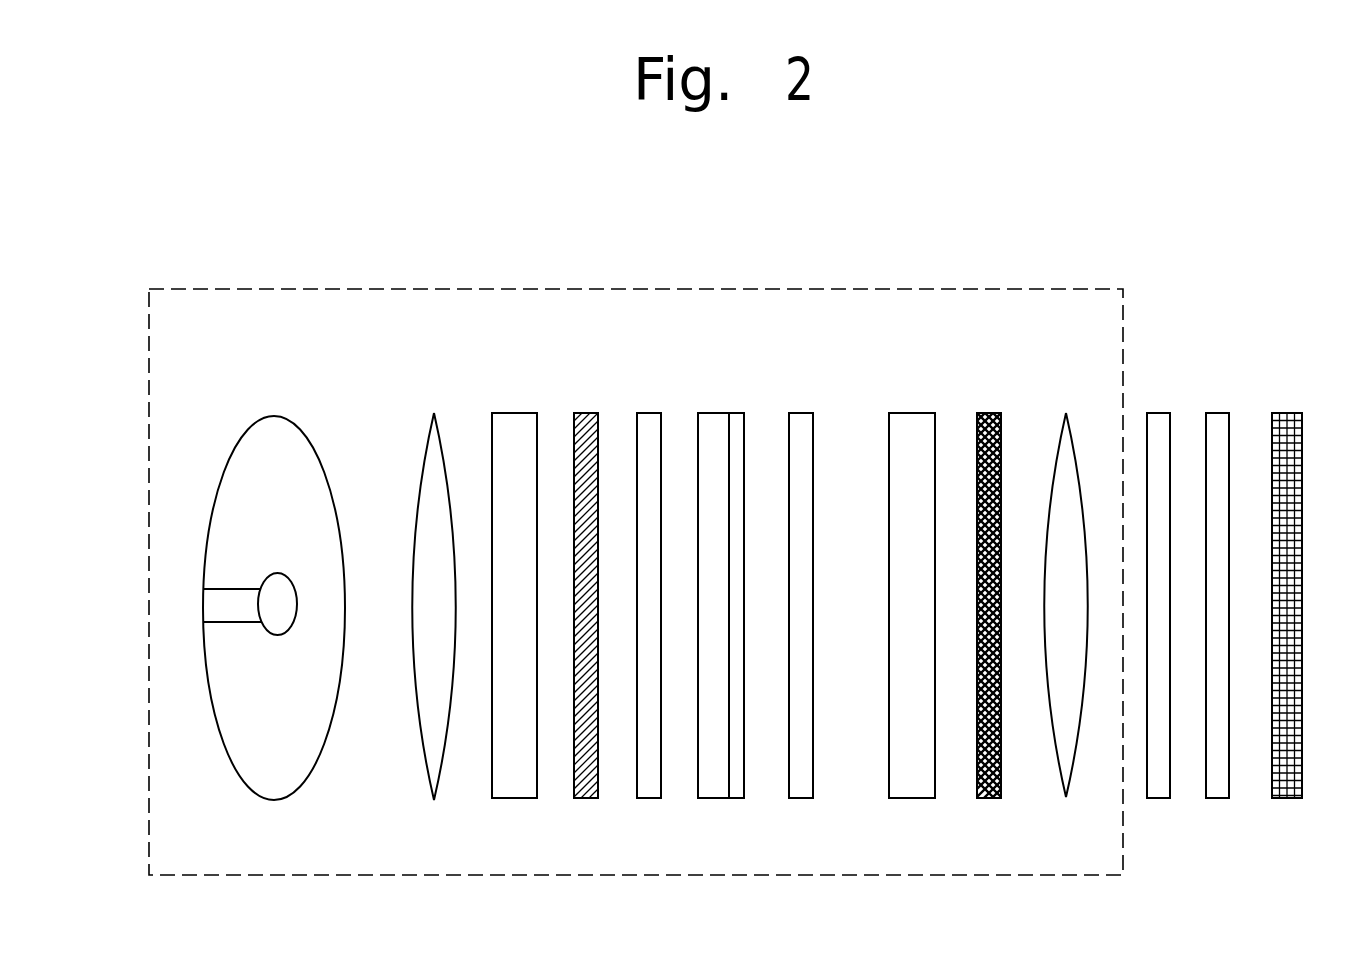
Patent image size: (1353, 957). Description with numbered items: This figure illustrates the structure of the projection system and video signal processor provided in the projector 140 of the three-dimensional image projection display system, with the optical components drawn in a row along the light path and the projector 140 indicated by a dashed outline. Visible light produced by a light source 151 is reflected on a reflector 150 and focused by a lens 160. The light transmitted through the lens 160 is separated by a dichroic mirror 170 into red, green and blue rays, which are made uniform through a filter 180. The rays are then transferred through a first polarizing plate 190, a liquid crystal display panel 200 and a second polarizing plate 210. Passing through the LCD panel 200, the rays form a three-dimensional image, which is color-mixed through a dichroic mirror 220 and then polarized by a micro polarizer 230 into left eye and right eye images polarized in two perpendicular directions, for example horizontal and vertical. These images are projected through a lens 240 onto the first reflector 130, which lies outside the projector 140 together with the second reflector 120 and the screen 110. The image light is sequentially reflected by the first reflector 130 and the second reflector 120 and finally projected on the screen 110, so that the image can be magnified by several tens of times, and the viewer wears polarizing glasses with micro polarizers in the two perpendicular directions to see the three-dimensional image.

The screen 110 is at (1287, 413).
The second reflector 120 is at (1218, 413).
The first reflector 130 is at (1159, 413).
The projector 140 is at (946, 289).
The reflector 150 is at (273, 416).
The light source 151 is at (278, 573).
The lens 160 is at (433, 413).
The dichroic mirror 170 is at (514, 413).
The filter 180 is at (584, 413).
The first polarizing plate 190 is at (650, 413).
The liquid crystal display (LCD) panel 200 is at (722, 413).
The second polarizing plate 210 is at (801, 413).
The dichroic mirror 220 is at (912, 413).
The micro polarizer 230 is at (988, 413).
The lens 240 is at (1066, 413).